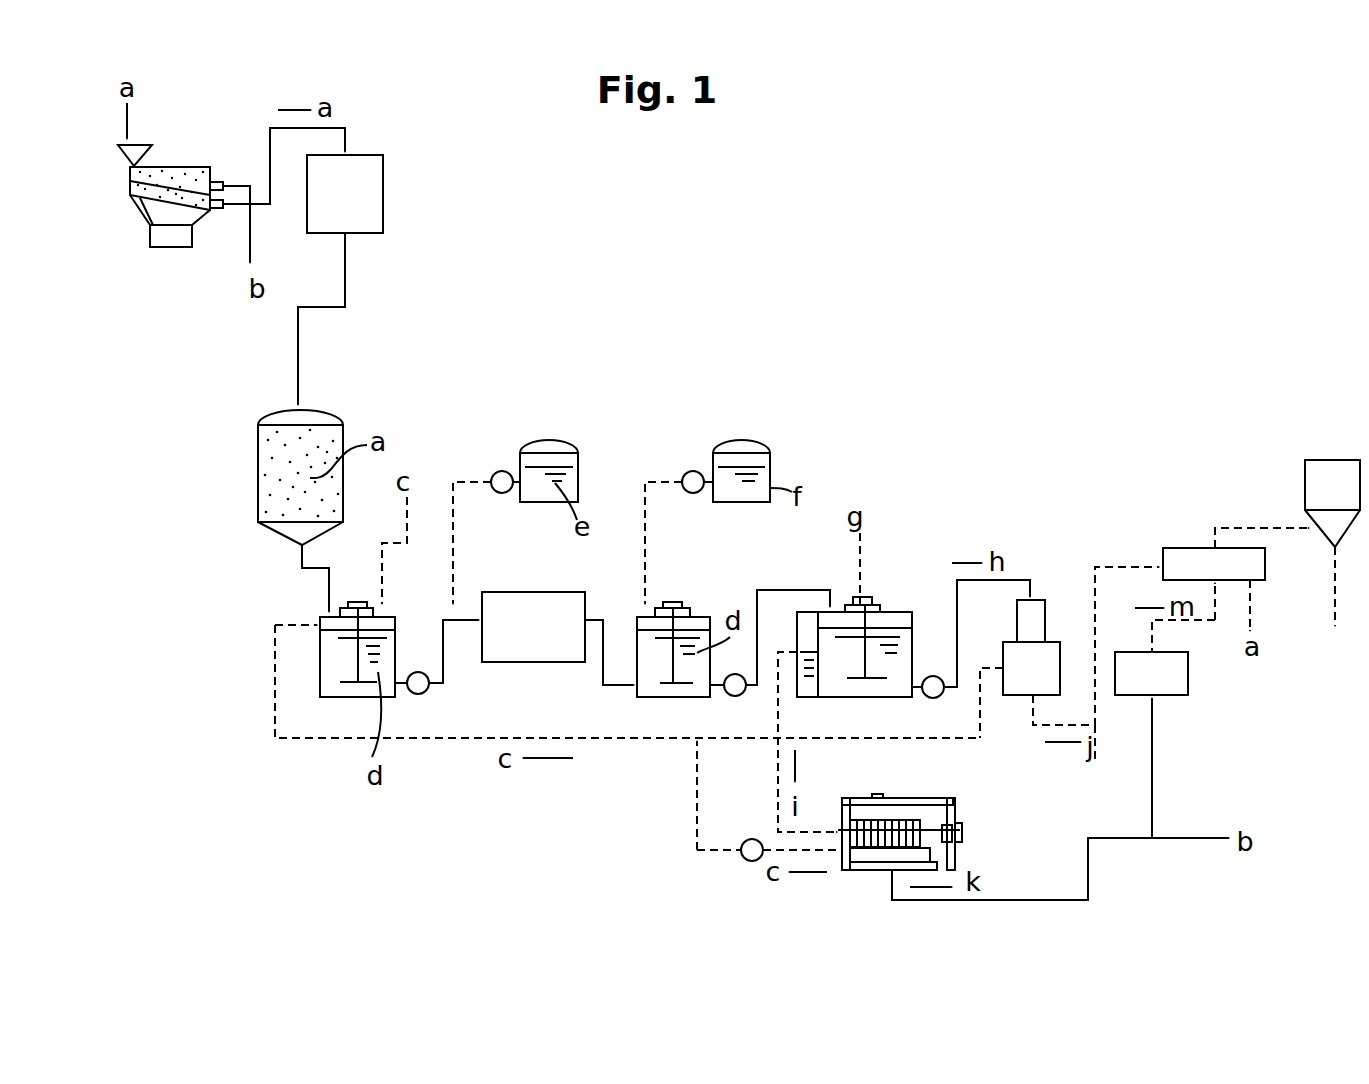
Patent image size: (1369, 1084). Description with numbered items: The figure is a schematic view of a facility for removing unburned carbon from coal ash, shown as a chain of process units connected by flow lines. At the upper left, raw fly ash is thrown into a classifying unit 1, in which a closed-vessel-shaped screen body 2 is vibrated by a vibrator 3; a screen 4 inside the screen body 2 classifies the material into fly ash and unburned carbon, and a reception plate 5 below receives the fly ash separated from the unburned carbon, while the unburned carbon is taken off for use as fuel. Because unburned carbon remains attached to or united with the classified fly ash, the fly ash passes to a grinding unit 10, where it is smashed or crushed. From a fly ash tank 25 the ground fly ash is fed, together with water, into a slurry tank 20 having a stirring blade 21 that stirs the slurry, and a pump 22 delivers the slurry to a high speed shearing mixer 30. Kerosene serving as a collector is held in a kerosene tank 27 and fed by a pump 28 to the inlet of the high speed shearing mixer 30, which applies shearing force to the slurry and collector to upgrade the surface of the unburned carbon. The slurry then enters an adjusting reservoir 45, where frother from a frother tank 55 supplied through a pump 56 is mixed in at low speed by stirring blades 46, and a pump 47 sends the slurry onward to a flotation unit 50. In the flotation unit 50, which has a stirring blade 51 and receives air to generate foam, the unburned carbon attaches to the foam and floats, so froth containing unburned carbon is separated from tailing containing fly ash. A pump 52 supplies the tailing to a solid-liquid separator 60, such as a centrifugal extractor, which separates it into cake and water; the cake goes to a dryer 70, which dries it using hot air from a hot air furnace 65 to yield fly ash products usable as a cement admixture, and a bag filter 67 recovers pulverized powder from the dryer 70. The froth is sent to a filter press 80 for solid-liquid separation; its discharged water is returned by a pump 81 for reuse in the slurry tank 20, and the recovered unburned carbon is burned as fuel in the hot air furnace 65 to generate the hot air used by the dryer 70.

The classifying unit 1 is at (137, 195).
The screen body 2 is at (188, 166).
The vibrator 3 is at (172, 247).
The screen 4 is at (187, 183).
The reception plate 5 is at (147, 215).
The grinding unit 10 is at (385, 188).
The slurry tank 20 is at (301, 697).
The stirring blade 21 is at (357, 655).
The pump 22 is at (427, 692).
The fly ash tank 25 is at (258, 480).
The kerosene tank 27 is at (580, 475).
The pump 28 is at (491, 479).
The high speed shearing mixer 30 is at (525, 592).
The adjusting reservoir 45 is at (650, 633).
The stirring blades 46 is at (670, 670).
The pump 47 is at (733, 698).
The flotation unit 50 is at (859, 632).
The stirring blade 51 is at (860, 653).
The pump 52 is at (942, 692).
The frother tank 55 is at (770, 475).
The pump 56 is at (684, 478).
The solid-liquid separator 60 is at (1045, 618).
The hot air furnace 65 is at (1188, 668).
The bag filter 67 is at (1305, 480).
The dryer 70 is at (1195, 548).
The filter press 80 is at (963, 832).
The pump 81 is at (742, 858).